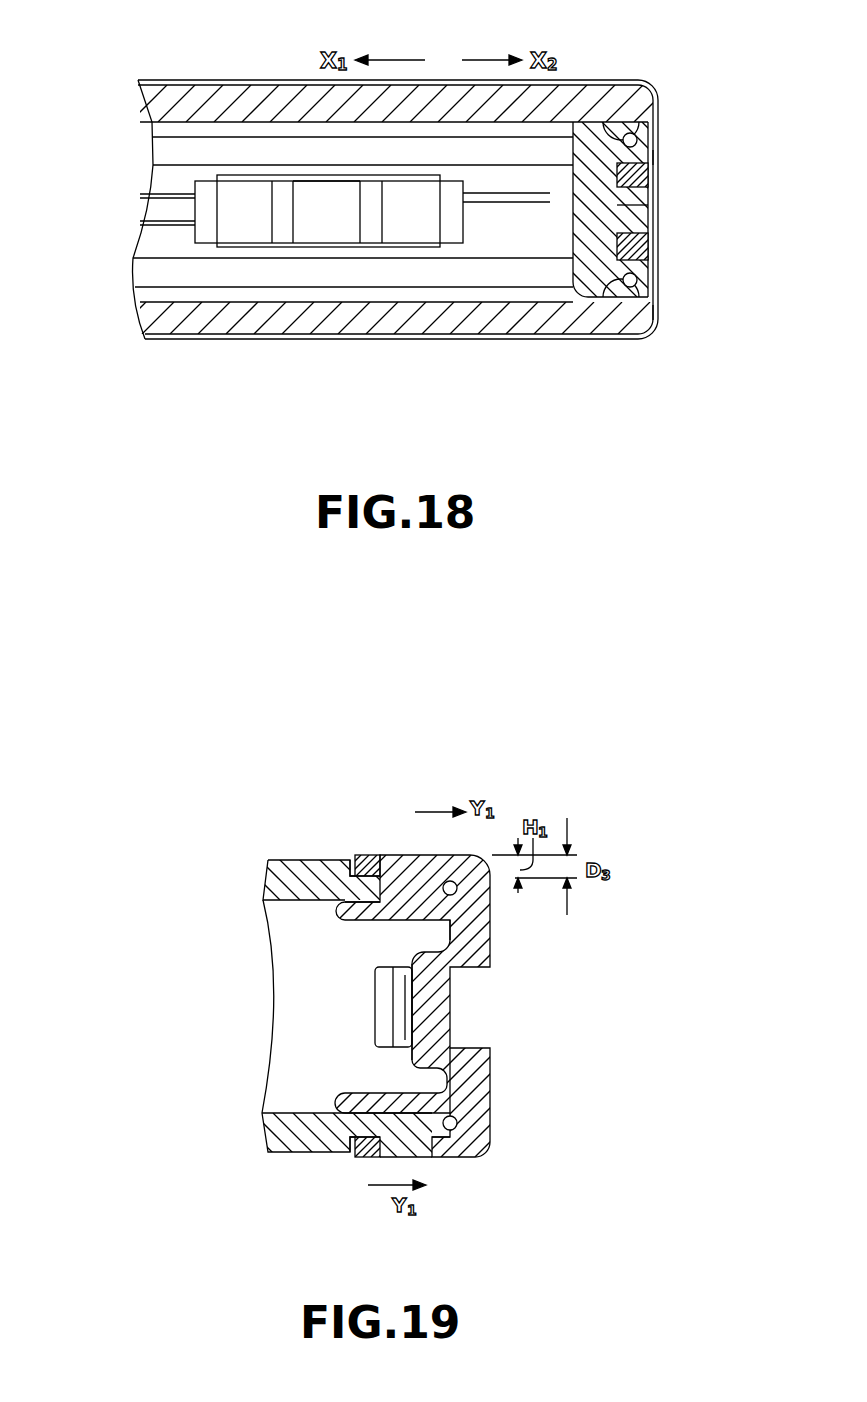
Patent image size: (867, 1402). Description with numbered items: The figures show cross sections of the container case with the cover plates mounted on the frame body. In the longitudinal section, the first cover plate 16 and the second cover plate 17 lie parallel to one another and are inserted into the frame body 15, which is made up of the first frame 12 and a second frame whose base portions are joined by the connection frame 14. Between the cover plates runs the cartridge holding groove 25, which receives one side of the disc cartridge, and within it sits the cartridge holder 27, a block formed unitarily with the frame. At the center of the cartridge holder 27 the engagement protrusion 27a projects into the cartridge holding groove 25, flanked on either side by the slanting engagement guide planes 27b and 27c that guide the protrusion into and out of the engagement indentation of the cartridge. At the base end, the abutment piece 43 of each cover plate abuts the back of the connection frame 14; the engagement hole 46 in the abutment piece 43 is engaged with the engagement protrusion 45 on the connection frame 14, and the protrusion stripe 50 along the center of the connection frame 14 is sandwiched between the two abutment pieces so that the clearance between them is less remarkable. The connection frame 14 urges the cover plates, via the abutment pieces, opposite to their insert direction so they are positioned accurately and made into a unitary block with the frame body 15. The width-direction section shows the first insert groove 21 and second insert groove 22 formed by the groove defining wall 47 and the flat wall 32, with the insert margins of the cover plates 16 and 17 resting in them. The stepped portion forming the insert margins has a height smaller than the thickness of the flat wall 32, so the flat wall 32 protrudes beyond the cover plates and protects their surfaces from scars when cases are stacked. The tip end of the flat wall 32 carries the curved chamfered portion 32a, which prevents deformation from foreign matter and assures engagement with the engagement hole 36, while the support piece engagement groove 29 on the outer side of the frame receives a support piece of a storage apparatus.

In FIG. 19, the first frame 12 is at (473, 1102).
In FIG. 18, the connection frame 14 is at (588, 270).
In FIG. 18, the frame body 15 is at (160, 150).
In FIG. 19, the frame body 15 is at (491, 1066).
In FIG. 18, the first cover plate 16 is at (192, 100).
In FIG. 19, the first cover plate 16 is at (280, 870).
In FIG. 18, the second cover plate 17 is at (178, 338).
In FIG. 19, the second cover plate 17 is at (268, 1125).
In FIG. 19, the first insert groove 21 is at (490, 924).
In FIG. 19, the second insert groove 22 is at (480, 1140).
In FIG. 18, the cartridge holding groove 25 is at (150, 270).
In FIG. 19, the cartridge holding groove 25 is at (272, 966).
In FIG. 18, the cartridge holder 27 is at (335, 228).
In FIG. 19, the cartridge holder 27 is at (375, 1004).
In FIG. 18, the engagement protrusion 27a is at (305, 233).
In FIG. 18, the engagement guide plane 27b is at (268, 227).
In FIG. 18, the engagement guide plane 27c is at (371, 230).
In FIG. 19, the support piece engagement groove 29 is at (478, 969).
In FIG. 19, the flat wall 32 is at (366, 856).
In FIG. 19, the curved chamfered portion 32a is at (351, 866).
In FIG. 19, the engagement hole 36 is at (385, 1160).
In FIG. 18, the abutment piece 43 is at (640, 163).
In FIG. 18, the engagement protrusion 45 is at (648, 95).
In FIG. 18, the engagement hole 46 is at (640, 158).
In FIG. 19, the groove defining wall 47 is at (340, 910).
In FIG. 18, the protrusion stripe 50 is at (640, 205).